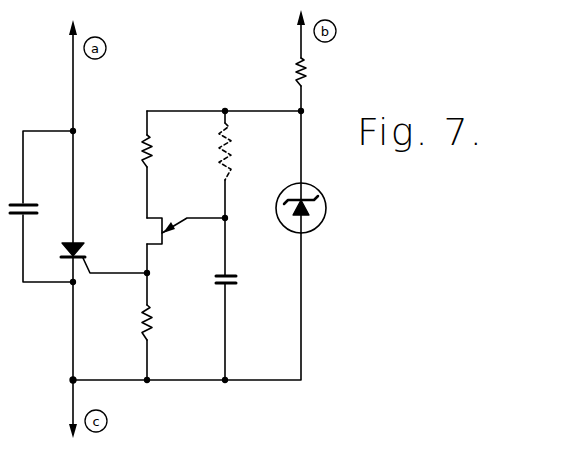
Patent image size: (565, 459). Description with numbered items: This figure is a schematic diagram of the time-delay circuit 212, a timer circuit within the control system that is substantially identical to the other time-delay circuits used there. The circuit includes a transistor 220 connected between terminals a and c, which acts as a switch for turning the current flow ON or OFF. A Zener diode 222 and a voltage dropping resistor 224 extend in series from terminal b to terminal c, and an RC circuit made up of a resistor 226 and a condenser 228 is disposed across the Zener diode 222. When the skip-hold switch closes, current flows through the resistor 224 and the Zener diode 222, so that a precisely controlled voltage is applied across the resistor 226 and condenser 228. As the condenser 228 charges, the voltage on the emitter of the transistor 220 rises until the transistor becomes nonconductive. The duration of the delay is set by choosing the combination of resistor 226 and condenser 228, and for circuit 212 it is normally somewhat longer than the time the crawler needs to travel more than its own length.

The time-delay circuit 212 is at (314, 299).
The transistor 220 is at (76, 243).
The Zener diode 222 is at (319, 216).
The voltage dropping resistor 224 is at (273, 67).
The resistor 226 is at (228, 148).
The condenser 228 is at (236, 285).